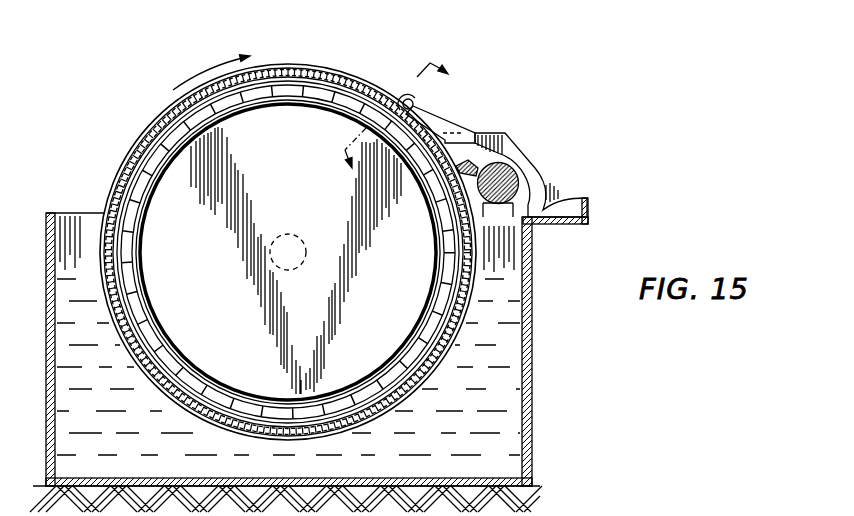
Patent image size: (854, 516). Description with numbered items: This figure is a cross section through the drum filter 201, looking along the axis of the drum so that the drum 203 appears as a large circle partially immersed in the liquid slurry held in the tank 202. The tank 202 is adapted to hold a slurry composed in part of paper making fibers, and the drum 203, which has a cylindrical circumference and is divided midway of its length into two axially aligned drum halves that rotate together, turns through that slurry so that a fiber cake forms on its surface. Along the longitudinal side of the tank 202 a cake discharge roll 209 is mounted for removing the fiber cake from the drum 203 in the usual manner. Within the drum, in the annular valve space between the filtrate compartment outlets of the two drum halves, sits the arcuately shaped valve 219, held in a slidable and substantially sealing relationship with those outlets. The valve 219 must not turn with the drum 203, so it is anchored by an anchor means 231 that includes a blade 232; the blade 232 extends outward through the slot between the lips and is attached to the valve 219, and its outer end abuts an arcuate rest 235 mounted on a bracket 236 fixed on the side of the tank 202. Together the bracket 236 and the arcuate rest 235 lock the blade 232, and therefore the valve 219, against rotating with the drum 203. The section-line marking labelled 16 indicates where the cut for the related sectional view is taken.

The drum filter 201 is at (126, 118).
The tank 202 is at (533, 304).
The drum 203 is at (132, 155).
The cake discharge roll 209 is at (518, 181).
The arcuate valve 219 is at (443, 211).
The anchor means 231 is at (519, 108).
The blade 232 is at (405, 95).
The arcuate rest 235 is at (419, 106).
The bracket 236 is at (530, 160).
The section line for FIG. 16 is at (382, 99).